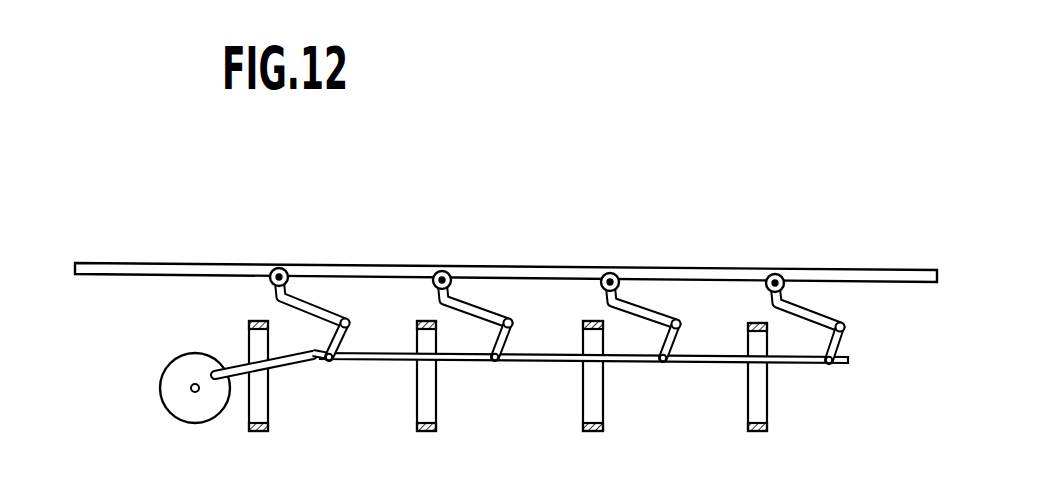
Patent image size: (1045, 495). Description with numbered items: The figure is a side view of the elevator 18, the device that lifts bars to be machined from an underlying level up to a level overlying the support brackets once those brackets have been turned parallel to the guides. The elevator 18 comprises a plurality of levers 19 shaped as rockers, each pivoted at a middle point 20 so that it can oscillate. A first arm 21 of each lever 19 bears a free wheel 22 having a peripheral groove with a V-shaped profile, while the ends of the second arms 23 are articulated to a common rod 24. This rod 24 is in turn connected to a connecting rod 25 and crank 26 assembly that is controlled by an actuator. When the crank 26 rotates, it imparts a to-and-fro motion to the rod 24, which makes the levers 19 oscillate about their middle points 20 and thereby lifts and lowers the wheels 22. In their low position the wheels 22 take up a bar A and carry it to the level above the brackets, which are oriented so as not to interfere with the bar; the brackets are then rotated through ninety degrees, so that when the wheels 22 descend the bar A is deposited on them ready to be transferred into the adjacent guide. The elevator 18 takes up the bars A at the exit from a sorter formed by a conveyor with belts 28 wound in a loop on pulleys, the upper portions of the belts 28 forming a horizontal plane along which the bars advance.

The bar A is at (712, 273).
The elevator 18 is at (533, 315).
The levers 19 is at (504, 299).
The middle point 20 is at (346, 317).
The first arm 21 is at (482, 317).
The free wheel 22 is at (442, 270).
The second arms 23 is at (507, 333).
The rod 24 is at (723, 363).
The connecting rod 25 is at (283, 370).
The crank 26 is at (193, 400).
The belts 28 is at (263, 429).